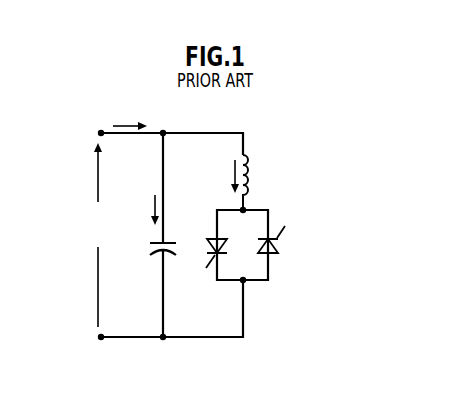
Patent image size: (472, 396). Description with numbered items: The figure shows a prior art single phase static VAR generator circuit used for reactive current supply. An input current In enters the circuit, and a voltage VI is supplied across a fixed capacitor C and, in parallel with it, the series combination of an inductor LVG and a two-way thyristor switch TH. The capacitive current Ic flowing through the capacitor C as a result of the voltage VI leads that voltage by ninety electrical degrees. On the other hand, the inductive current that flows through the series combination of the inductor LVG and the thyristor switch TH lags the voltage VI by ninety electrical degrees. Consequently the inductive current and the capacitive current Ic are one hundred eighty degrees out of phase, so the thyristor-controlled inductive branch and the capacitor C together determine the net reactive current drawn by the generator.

The input current In is at (124, 123).
The voltage VI is at (97, 235).
The capacitive current Ic is at (152, 214).
The fixed capacitor C is at (148, 248).
The inductor LVG is at (255, 160).
The two-way thyristor switch TH is at (253, 261).